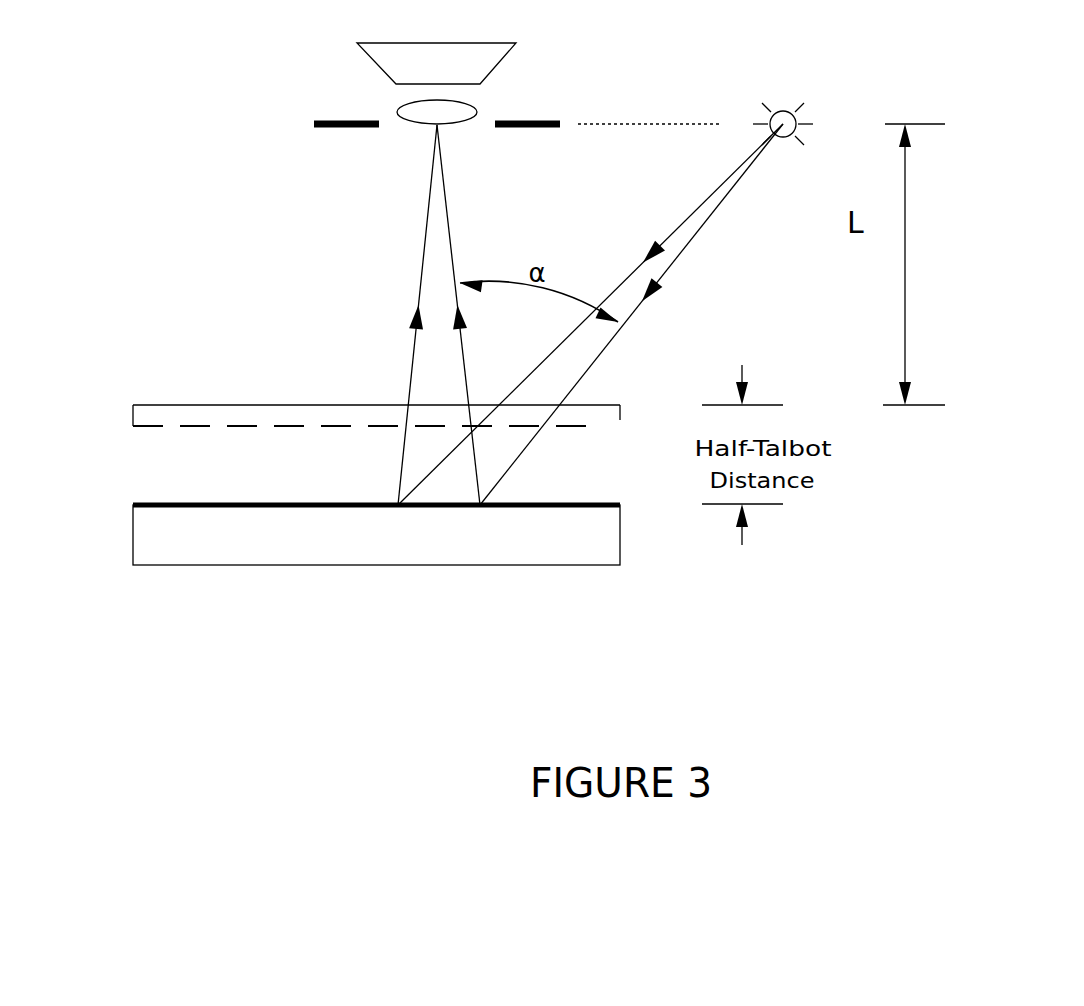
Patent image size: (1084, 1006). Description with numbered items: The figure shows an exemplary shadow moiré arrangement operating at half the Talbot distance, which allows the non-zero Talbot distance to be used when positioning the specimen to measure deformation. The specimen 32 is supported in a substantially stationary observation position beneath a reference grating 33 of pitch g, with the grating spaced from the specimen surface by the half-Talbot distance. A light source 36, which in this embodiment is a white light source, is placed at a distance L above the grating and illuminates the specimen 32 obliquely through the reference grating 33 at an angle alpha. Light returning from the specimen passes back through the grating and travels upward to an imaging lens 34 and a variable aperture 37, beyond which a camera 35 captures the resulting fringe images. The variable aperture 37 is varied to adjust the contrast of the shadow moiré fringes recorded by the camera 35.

The specimen 32 is at (622, 508).
The reference grating 33 is at (133, 405).
The imaging lens 34 is at (397, 110).
The camera 35 is at (377, 68).
The light source 36 is at (815, 112).
The variable aperture 37 is at (556, 120).